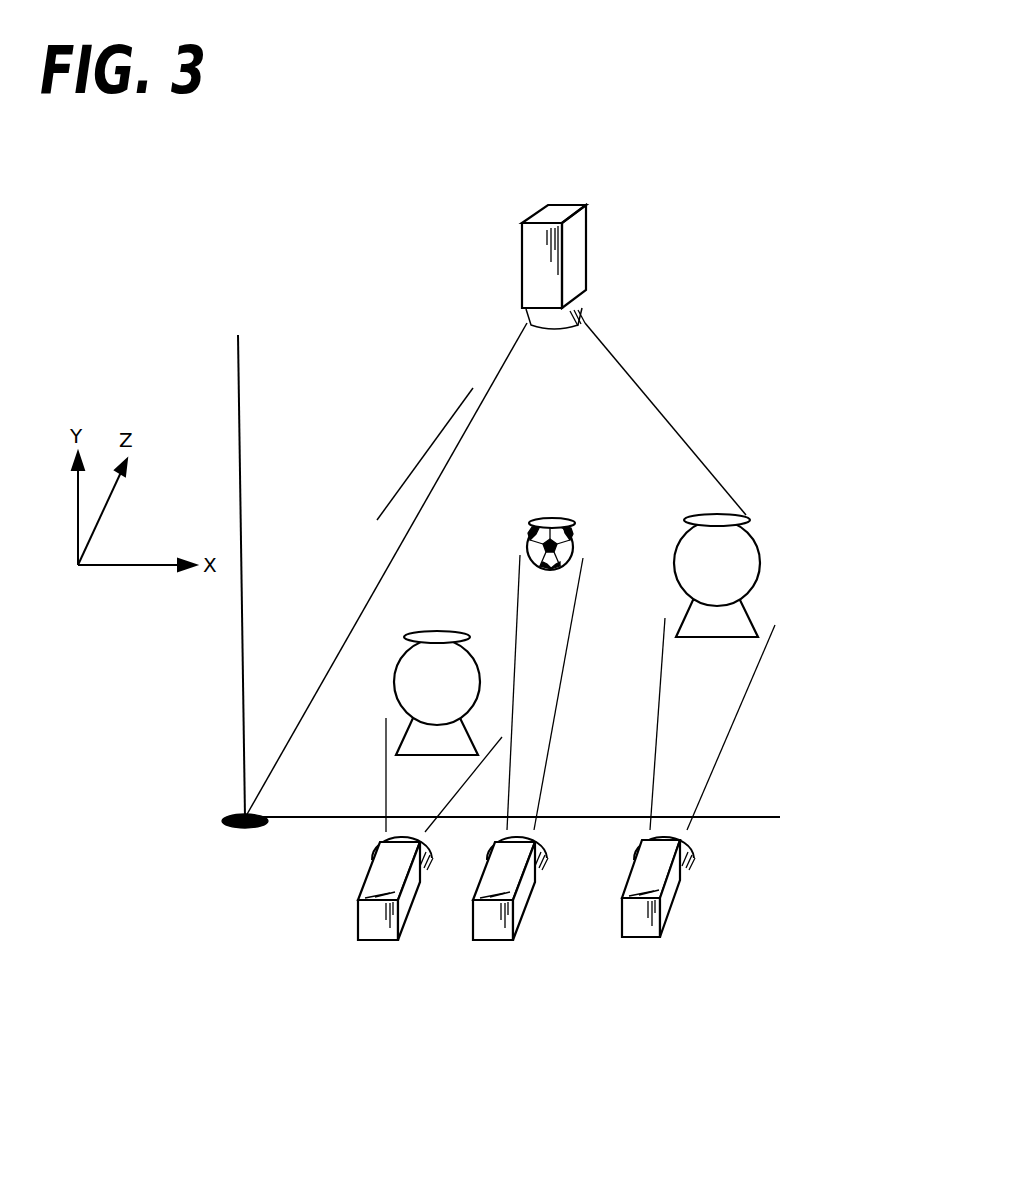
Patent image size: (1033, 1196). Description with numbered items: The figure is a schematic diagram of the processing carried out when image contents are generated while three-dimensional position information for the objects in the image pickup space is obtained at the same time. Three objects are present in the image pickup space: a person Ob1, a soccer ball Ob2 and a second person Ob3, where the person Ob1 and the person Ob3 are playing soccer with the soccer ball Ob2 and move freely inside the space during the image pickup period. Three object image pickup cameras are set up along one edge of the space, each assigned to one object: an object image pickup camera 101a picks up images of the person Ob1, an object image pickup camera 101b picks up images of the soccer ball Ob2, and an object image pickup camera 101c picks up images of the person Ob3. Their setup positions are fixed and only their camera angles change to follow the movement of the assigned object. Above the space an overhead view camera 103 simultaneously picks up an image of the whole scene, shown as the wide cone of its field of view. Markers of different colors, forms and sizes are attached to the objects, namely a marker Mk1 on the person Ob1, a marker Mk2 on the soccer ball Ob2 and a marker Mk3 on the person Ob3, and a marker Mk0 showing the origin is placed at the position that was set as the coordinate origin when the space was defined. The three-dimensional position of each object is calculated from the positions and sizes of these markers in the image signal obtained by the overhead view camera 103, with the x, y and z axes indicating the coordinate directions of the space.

The overhead view camera 103 is at (590, 250).
The marker showing the origin Mk0 is at (245, 828).
The marker attached to person Ob1 Mk1 is at (438, 632).
The marker attached to soccer ball Ob2 Mk2 is at (552, 519).
The marker attached to person Ob3 Mk3 is at (748, 519).
The person (object) Ob1 is at (394, 690).
The soccer ball Ob2 is at (573, 542).
The person (object) Ob3 is at (760, 563).
The object image pickup camera 101a is at (380, 940).
The object image pickup camera 101b is at (498, 940).
The object image pickup camera 101c is at (642, 938).